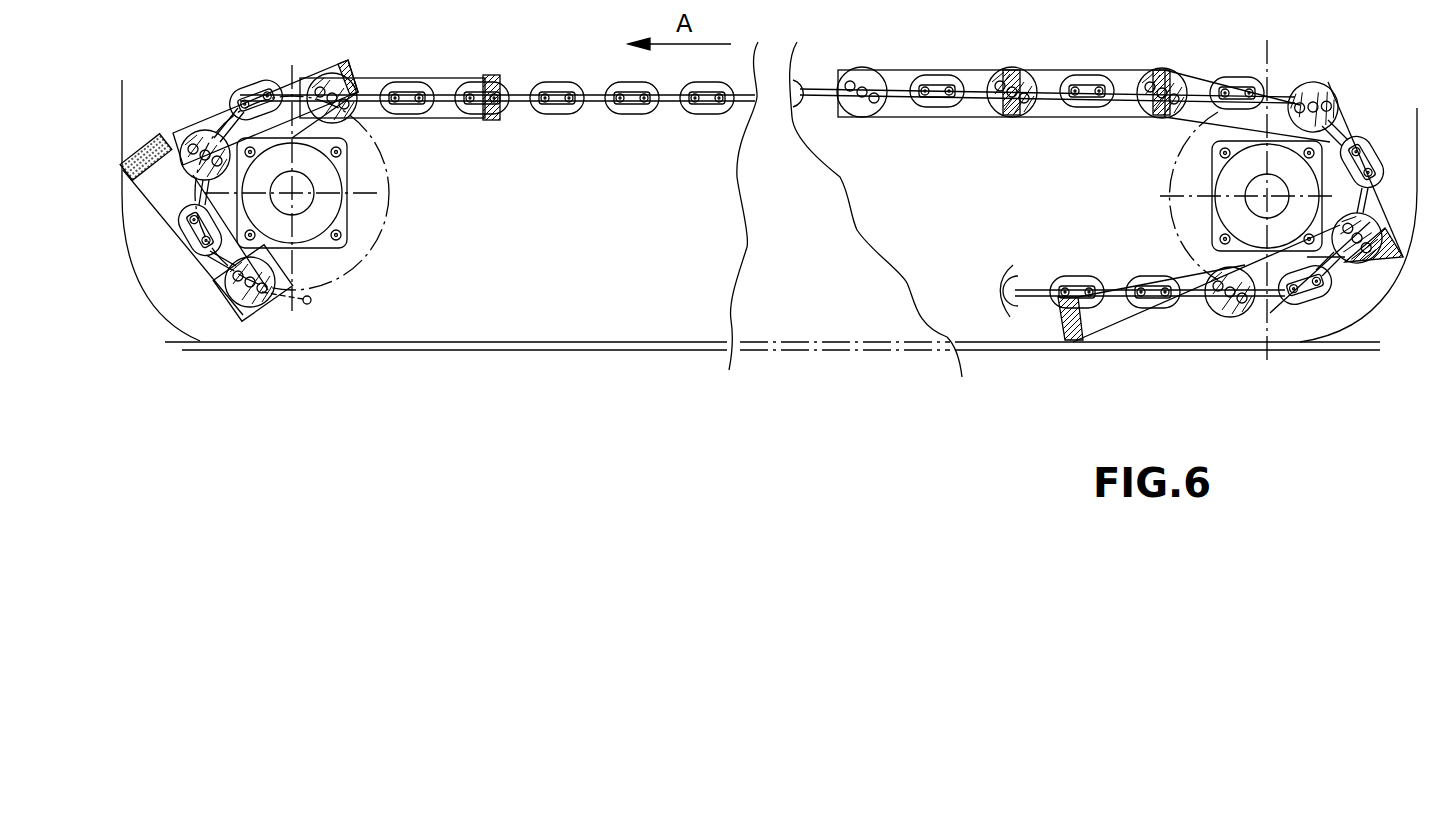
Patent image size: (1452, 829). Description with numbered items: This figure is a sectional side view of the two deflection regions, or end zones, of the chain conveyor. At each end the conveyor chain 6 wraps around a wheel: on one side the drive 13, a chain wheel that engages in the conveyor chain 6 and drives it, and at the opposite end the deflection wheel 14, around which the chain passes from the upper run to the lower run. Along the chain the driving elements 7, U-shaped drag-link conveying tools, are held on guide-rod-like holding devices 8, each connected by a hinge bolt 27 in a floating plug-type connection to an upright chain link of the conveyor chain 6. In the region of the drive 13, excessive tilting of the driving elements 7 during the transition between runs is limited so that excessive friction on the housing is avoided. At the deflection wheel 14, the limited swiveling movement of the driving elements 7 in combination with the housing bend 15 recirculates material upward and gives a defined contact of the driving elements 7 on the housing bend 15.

The conveyor chain 6 is at (560, 88).
The driving element 7 is at (493, 75).
The holding device 8 is at (383, 80).
The drive 13 is at (372, 198).
The deflection wheel 14 is at (1195, 218).
The housing bend 15 is at (1413, 124).
The hinge bolt 27 is at (343, 75).